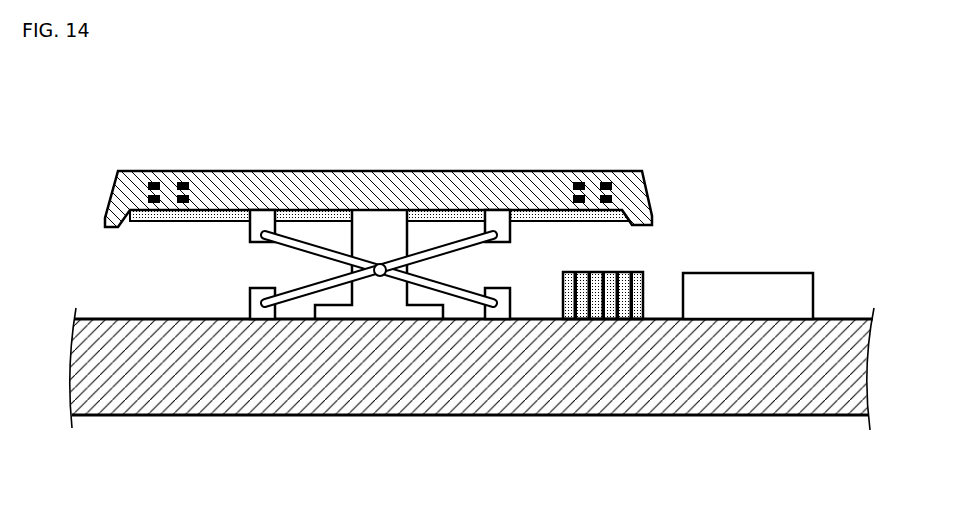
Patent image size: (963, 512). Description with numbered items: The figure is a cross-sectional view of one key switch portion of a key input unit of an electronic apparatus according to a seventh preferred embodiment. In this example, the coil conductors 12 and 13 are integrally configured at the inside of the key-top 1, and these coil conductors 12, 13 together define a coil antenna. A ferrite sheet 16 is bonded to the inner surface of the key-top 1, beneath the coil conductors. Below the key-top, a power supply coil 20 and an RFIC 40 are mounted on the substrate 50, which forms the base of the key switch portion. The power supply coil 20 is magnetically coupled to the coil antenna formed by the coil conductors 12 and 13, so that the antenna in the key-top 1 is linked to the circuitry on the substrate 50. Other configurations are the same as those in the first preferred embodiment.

The key-top 1 is at (405, 198).
The coil conductor 12 is at (612, 186).
The coil conductor 13 is at (615, 199).
The ferrite sheet 16 is at (200, 222).
The power supply coil 20 is at (647, 272).
The RFIC 40 is at (755, 272).
The substrate 50 is at (795, 395).